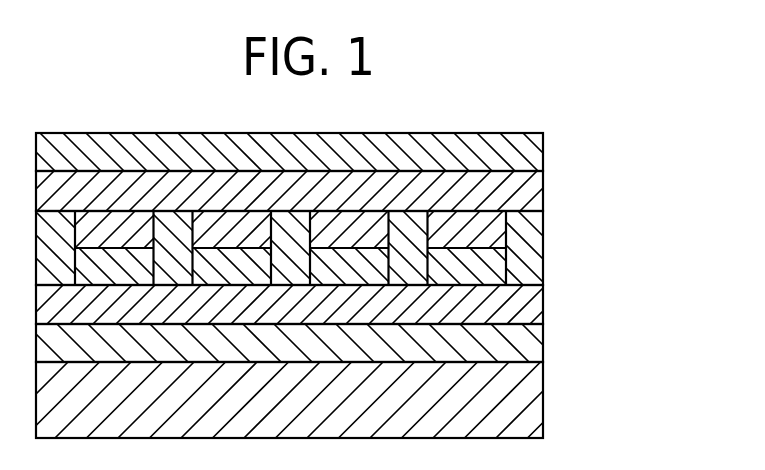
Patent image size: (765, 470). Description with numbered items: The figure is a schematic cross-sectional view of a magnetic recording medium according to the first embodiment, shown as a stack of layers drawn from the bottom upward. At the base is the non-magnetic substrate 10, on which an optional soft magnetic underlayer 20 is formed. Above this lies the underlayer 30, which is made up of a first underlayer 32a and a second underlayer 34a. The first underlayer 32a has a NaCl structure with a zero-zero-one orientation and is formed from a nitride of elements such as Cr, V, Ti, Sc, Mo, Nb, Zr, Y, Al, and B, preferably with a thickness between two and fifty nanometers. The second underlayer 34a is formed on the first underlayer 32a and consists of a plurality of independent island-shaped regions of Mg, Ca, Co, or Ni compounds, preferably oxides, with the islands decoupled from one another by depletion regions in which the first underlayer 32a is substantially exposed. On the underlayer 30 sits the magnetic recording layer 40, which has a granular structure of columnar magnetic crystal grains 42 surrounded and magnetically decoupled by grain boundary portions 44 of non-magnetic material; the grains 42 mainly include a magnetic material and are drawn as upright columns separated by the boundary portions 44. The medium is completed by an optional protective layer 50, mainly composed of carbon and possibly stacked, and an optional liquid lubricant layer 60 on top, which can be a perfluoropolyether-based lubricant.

The non-magnetic substrate 10 is at (527, 387).
The soft magnetic underlayer 20 is at (527, 346).
The underlayer 30 is at (382, 288).
The first underlayer 32a is at (523, 310).
The second underlayer 34a is at (490, 271).
The magnetic recording layer 40 is at (375, 237).
The magnetic crystal grains 42 is at (490, 231).
The grain boundary portions 44 is at (525, 244).
The protective layer 50 is at (523, 187).
The liquid lubricant layer 60 is at (523, 147).